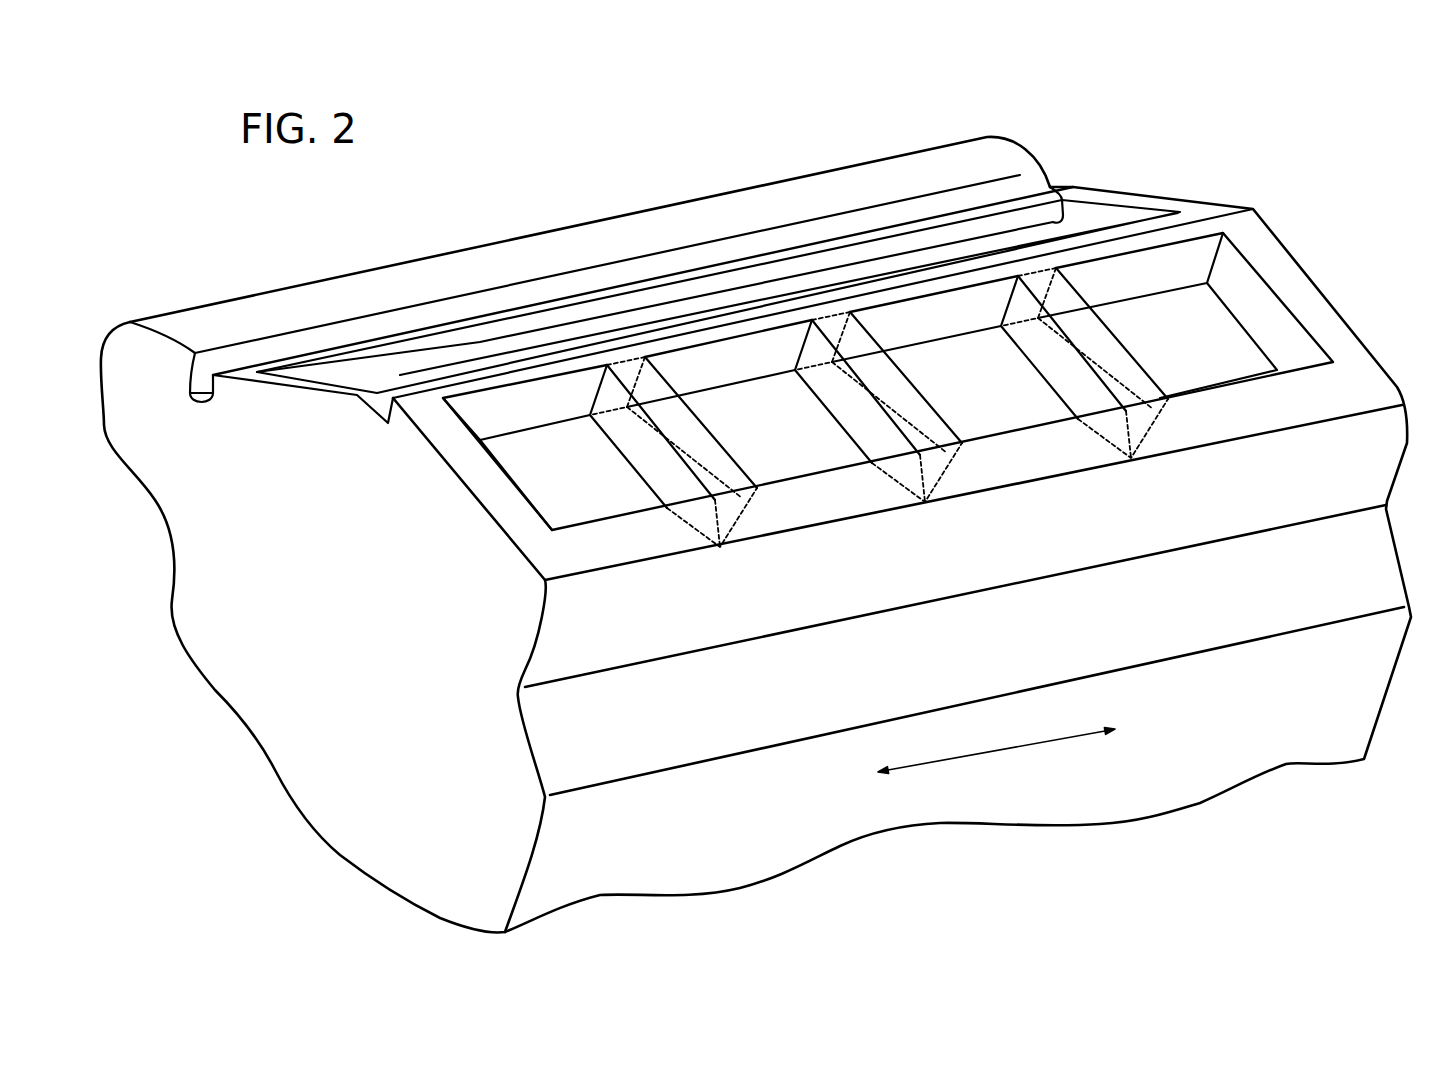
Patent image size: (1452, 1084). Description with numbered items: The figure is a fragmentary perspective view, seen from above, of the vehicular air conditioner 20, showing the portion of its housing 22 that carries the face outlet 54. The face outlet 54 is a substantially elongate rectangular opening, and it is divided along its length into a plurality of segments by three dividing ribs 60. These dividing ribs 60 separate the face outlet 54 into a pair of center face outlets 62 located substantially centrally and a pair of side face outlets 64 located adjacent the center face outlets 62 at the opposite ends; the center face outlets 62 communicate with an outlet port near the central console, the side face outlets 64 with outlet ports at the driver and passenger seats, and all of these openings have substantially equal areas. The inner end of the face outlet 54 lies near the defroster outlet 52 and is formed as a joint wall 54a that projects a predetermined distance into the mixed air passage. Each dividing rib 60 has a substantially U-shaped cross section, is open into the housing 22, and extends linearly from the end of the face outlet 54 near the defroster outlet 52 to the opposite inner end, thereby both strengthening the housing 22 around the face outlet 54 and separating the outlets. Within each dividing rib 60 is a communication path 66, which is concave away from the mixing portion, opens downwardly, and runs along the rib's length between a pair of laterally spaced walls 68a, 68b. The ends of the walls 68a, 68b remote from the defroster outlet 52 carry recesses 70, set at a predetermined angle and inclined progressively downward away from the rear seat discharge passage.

The vehicular air conditioner 20 is at (1134, 117).
The housing 22 is at (310, 797).
The defroster outlet 52 is at (508, 350).
The face outlet 54 is at (510, 456).
The joint wall 54a is at (733, 360).
The dividing rib 60 is at (866, 429).
The center face outlet 62 is at (785, 463).
The side face outlet 64 is at (580, 508).
The communication path 66 is at (598, 390).
The wall 68a is at (627, 437).
The wall 68b is at (753, 466).
The recess 70 is at (720, 550).